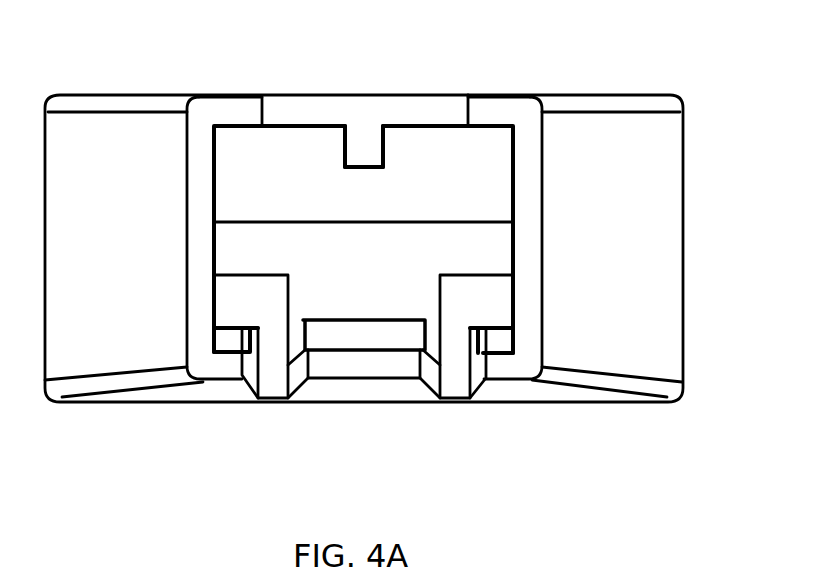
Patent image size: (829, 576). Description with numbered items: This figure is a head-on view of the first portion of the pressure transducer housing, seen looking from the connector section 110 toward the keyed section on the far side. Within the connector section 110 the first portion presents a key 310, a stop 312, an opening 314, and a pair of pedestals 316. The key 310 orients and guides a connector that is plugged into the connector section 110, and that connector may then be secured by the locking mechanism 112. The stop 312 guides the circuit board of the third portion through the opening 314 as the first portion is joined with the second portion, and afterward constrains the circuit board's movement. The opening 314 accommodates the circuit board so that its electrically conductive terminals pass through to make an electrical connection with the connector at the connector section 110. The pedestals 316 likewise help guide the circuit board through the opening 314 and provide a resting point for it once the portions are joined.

The connector section 110 is at (657, 250).
The locking mechanism 112 is at (377, 357).
The key 310 is at (358, 145).
The stop 312 is at (470, 165).
The opening 314 is at (452, 247).
The pedestals 316 is at (248, 305).